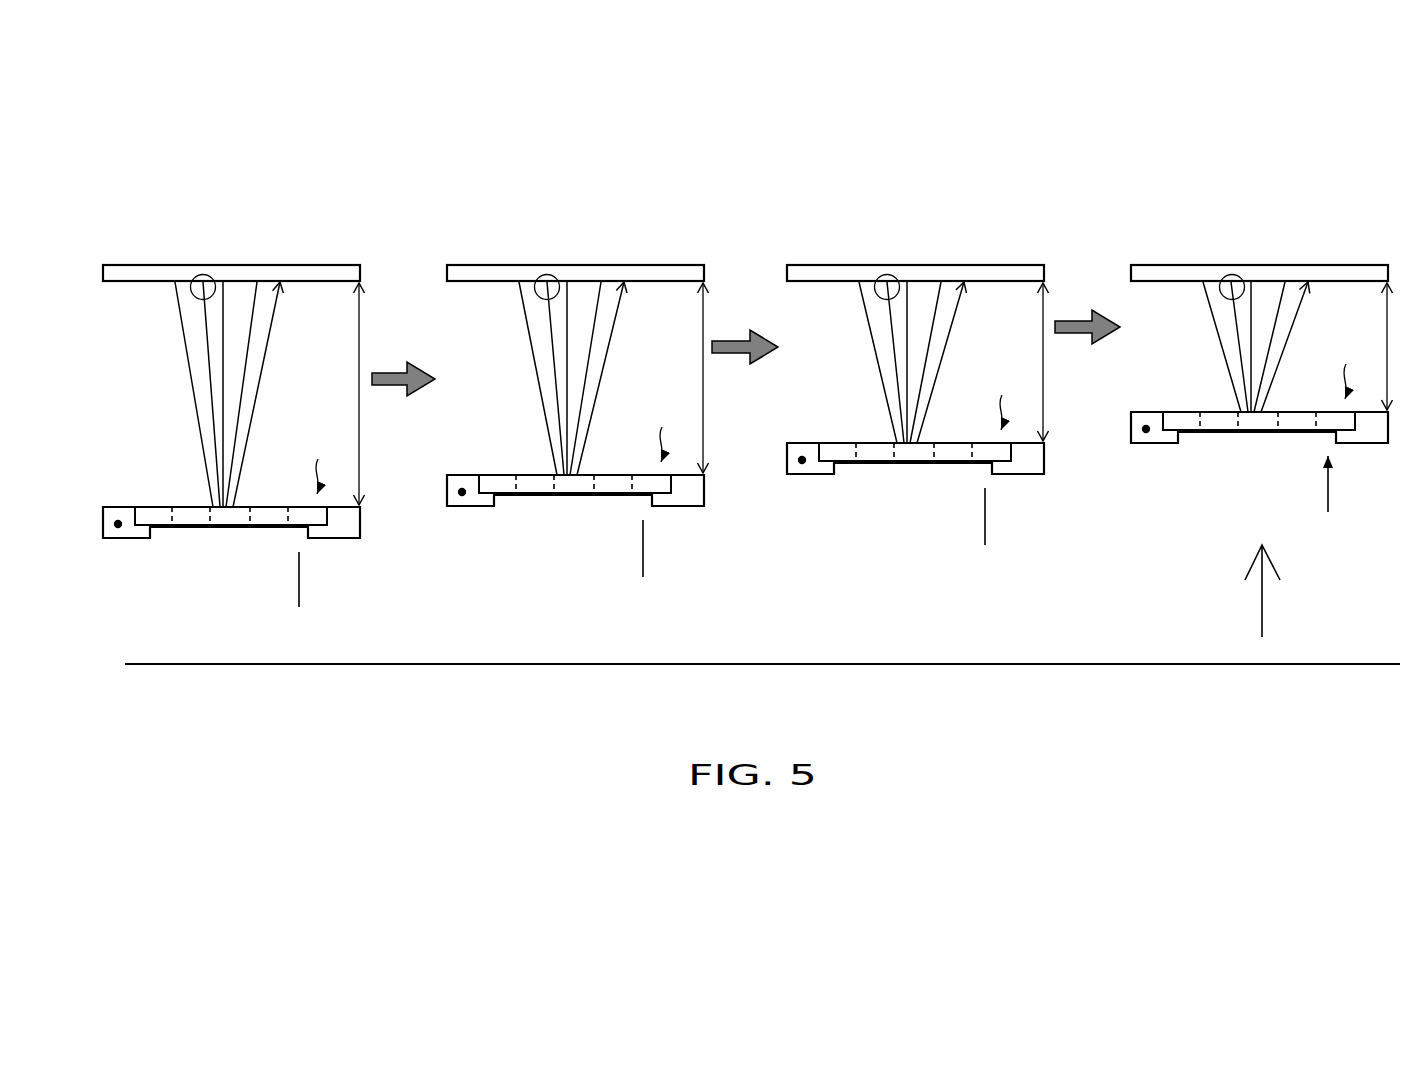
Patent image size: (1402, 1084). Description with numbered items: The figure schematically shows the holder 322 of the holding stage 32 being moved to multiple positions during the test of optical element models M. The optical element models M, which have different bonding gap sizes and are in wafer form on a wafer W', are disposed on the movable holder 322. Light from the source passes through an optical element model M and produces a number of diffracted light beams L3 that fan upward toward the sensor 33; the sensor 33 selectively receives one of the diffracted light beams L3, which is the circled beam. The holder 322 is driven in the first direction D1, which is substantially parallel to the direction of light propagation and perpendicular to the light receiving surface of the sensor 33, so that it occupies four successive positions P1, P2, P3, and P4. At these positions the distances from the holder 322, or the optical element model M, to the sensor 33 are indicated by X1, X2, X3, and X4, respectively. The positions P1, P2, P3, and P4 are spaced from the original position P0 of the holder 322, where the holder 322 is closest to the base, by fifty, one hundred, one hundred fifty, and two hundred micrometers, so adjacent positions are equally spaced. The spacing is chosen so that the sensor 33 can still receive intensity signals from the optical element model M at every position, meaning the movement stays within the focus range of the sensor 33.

The sensor 33 is at (135, 271).
The holding stage 32 is at (114, 494).
The holder 322 is at (126, 509).
The optical element model M is at (157, 518).
The diffracted light beam L3 is at (186, 349).
The first position P1 is at (115, 524).
The second position P2 is at (459, 492).
The third position P3 is at (799, 460).
The fourth position P4 is at (1143, 429).
The distance at first position X1 is at (335, 394).
The distance at second position X2 is at (678, 378).
The distance at third position X3 is at (1021, 362).
The distance at fourth position X4 is at (1363, 346).
The wafer W' is at (832, 413).
The original position P0 is at (740, 664).
The first direction D1 is at (1245, 591).